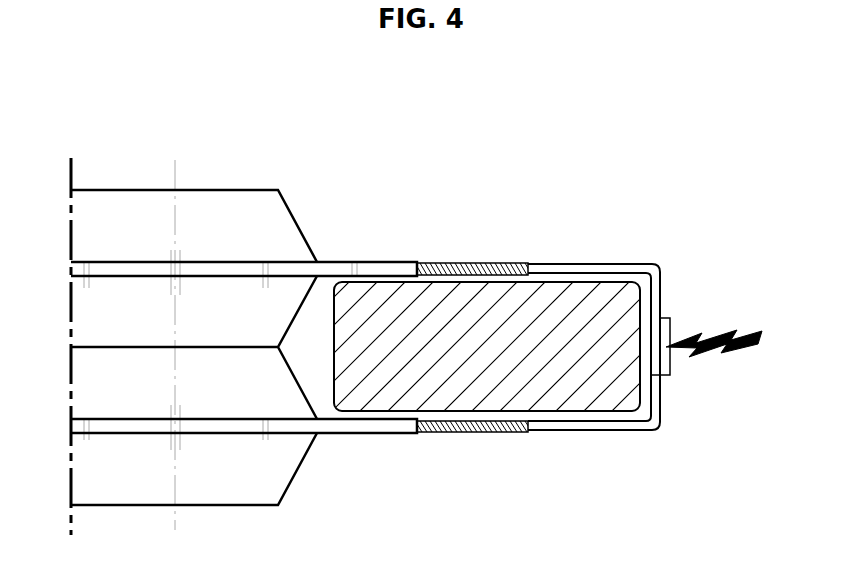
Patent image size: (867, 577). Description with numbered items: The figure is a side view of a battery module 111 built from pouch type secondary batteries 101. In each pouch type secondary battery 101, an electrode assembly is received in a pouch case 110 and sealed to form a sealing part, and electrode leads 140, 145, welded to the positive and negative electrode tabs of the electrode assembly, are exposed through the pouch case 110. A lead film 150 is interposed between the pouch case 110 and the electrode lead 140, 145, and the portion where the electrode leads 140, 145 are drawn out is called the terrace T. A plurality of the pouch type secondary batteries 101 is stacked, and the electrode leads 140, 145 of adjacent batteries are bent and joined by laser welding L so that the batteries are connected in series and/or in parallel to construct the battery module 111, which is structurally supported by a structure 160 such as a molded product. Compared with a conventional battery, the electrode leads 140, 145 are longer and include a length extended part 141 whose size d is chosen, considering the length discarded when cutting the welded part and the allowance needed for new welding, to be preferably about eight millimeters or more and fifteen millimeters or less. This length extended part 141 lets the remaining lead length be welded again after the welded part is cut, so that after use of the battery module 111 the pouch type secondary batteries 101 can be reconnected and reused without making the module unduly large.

The pouch type secondary battery 101 is at (116, 156).
The pouch case 110 is at (231, 190).
The battery module 111 is at (598, 153).
The electrode lead 140 is at (612, 264).
The length extended part 141 is at (506, 255).
The electrode lead 145 is at (612, 431).
The lead film 150 is at (466, 433).
The structure 160 is at (550, 390).
The laser welding L is at (757, 334).
The terrace T is at (377, 262).
The size of the length extended part d is at (417, 256).